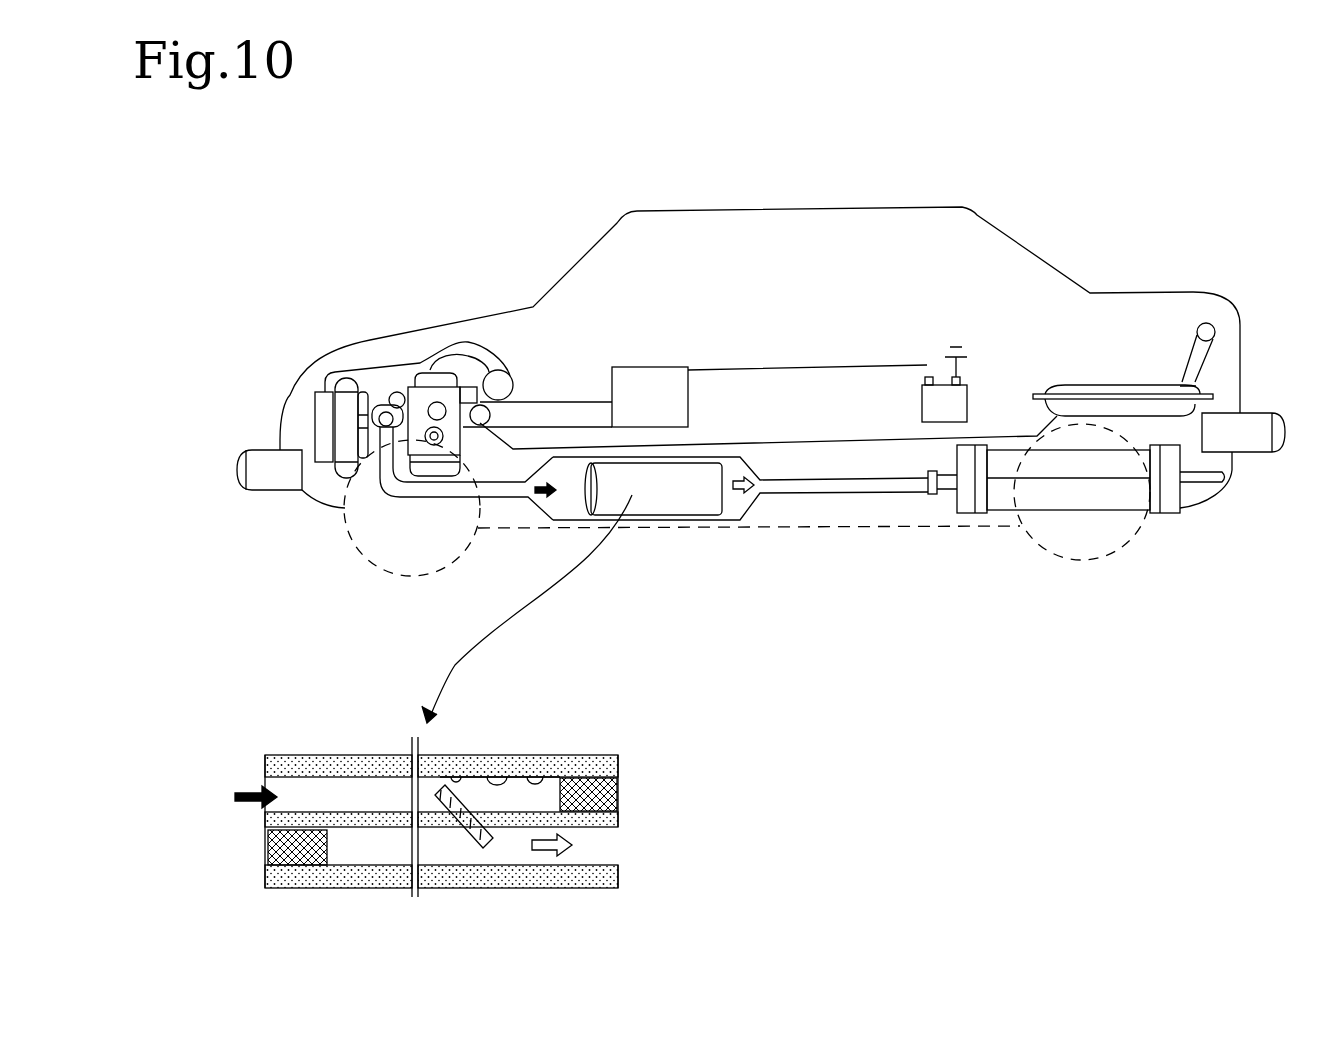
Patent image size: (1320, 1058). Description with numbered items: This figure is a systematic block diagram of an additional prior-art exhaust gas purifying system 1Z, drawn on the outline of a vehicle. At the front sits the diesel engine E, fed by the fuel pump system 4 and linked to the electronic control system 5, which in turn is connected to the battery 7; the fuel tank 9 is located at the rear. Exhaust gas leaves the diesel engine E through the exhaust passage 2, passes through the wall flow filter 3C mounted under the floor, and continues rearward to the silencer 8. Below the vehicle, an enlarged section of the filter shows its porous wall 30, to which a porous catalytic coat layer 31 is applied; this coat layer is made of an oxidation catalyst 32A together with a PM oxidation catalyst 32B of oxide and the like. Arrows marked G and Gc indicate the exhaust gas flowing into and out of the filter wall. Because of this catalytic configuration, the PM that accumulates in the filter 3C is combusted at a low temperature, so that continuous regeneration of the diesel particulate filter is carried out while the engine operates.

The system 1Z is at (604, 210).
The diesel engine E is at (417, 393).
The exhaust passage 2 is at (395, 498).
The wall flow filter 3C is at (693, 503).
The fuel pump system 4 is at (503, 362).
The electronic control system 5 is at (673, 380).
The battery 7 is at (938, 370).
The silencer 8 is at (1007, 453).
The fuel tank 9 is at (1122, 383).
The porous wall 30 is at (618, 753).
The porous catalytic coat layer 31 is at (540, 780).
The oxidation catalyst 32A is at (467, 773).
The PM oxidation catalyst 32B is at (520, 773).
The exhaust gas G is at (543, 496).
The purified exhaust gas Gc is at (738, 492).